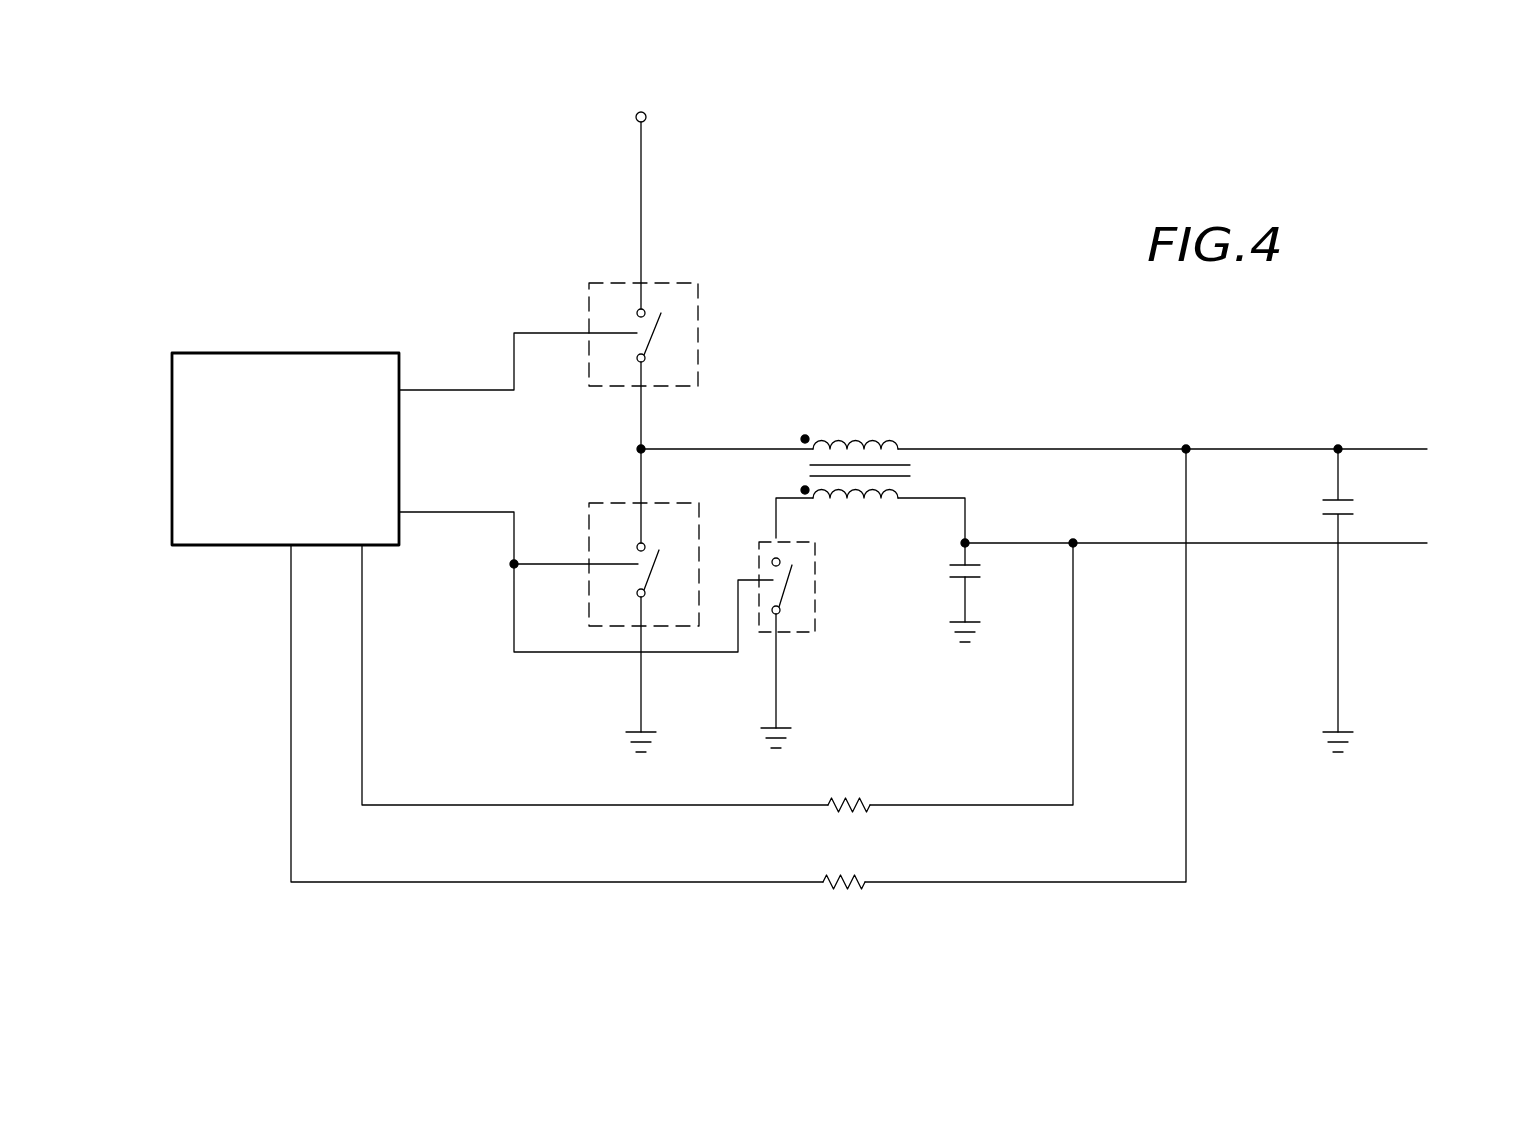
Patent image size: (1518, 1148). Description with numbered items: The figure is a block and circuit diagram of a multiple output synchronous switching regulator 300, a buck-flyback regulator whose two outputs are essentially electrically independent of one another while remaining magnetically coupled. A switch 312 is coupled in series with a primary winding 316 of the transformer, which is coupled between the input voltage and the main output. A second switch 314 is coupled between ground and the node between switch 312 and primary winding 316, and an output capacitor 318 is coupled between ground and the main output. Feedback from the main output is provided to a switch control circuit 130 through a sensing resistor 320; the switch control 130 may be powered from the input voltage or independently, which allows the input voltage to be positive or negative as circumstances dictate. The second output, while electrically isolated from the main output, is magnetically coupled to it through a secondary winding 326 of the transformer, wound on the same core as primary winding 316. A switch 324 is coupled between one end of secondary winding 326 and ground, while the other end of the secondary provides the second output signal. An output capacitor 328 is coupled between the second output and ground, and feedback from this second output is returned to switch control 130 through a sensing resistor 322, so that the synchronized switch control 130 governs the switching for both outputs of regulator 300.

The switch control circuit 130 is at (398, 356).
The multiple output synchronous switching regulator 300 is at (976, 216).
The switch 312 is at (699, 301).
The second switch 314 is at (699, 522).
The primary winding 316 is at (900, 440).
The output capacitor 318 is at (1320, 509).
The sensing resistor 320 is at (848, 891).
The sensing resistor 322 is at (858, 813).
The switch 324 is at (816, 633).
The secondary winding 326 is at (899, 501).
The output capacitor 328 is at (958, 566).